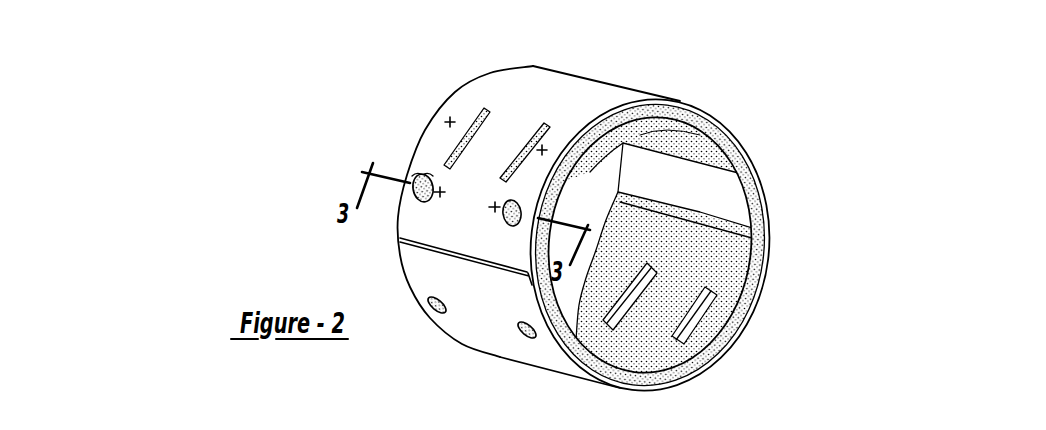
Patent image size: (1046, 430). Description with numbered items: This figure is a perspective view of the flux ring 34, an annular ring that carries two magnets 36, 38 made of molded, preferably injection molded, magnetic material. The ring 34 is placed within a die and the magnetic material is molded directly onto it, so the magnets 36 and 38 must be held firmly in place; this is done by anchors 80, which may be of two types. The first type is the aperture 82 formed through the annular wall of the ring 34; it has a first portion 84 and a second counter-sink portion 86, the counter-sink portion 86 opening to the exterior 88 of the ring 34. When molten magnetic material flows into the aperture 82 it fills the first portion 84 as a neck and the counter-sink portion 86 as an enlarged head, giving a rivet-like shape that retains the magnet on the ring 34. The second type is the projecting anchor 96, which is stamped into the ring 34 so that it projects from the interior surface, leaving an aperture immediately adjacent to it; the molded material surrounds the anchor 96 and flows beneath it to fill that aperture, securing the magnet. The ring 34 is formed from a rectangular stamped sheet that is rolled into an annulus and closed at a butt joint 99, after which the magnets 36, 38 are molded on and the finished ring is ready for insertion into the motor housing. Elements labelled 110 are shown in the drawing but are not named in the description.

The flux ring 34 is at (609, 57).
The magnet 36 is at (670, 117).
The magnet 38 is at (671, 362).
The anchors 80 is at (496, 233).
The aperture 82 is at (419, 175).
The first portion 84 is at (431, 181).
The second counter-sink portion 86 is at (427, 172).
The exterior 88 is at (574, 106).
The projecting anchor 96 is at (662, 268).
The butt joint 99 is at (705, 207).
The outer slots 110 is at (547, 125).